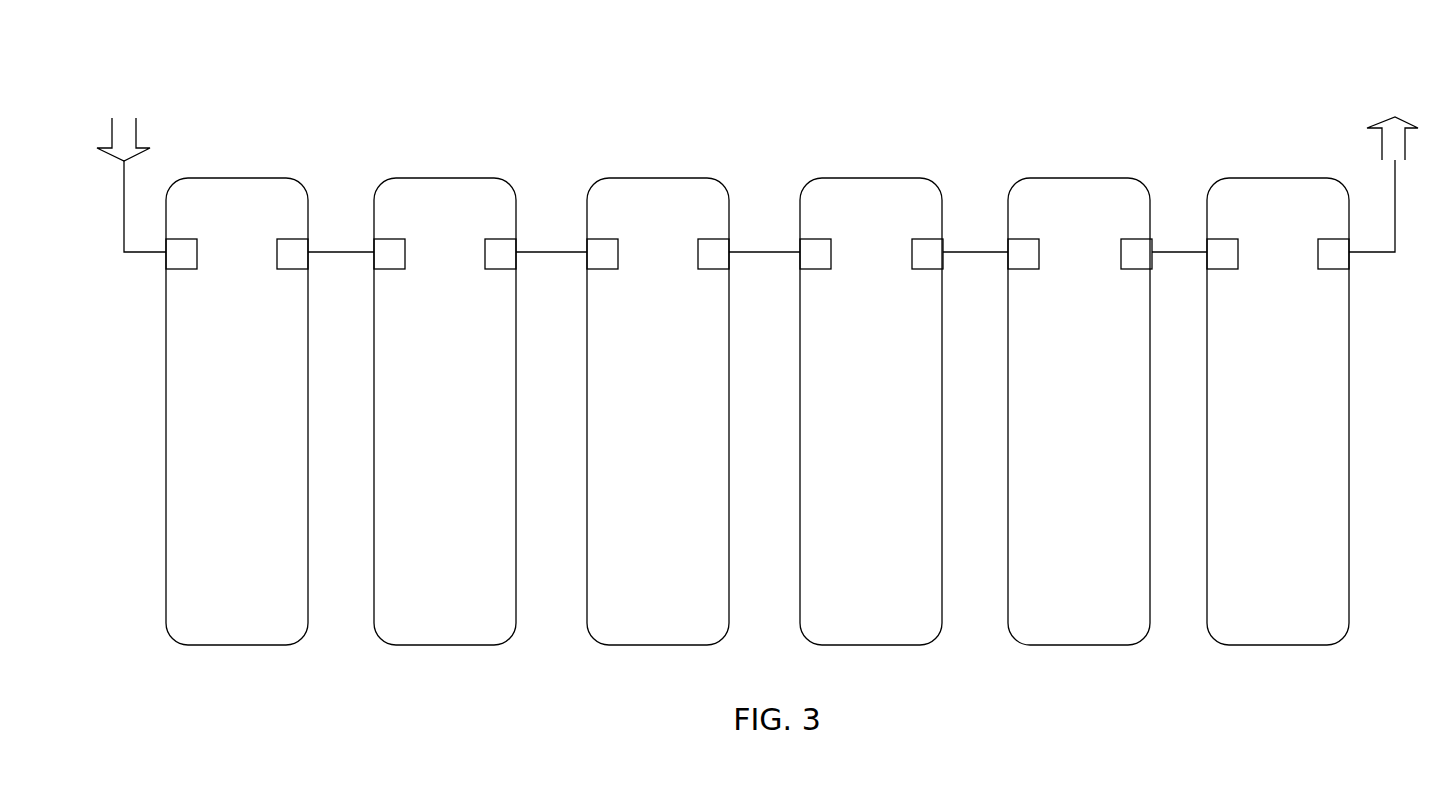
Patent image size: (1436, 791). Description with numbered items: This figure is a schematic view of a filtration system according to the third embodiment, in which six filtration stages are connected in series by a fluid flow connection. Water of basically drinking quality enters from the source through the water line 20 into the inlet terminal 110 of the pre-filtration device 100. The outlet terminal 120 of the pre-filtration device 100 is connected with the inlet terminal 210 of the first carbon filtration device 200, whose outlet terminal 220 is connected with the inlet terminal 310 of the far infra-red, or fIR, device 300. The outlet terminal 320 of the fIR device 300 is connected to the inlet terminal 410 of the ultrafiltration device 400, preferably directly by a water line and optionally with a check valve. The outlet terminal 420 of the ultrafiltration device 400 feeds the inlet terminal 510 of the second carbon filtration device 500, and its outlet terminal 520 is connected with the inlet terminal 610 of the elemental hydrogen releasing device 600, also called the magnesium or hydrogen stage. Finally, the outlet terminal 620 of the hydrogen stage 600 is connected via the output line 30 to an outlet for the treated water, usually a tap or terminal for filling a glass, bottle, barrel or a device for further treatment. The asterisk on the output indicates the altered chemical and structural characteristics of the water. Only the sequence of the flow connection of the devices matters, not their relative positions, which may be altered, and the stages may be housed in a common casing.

The water line 20 is at (115, 240).
The output line 30 is at (1398, 235).
The pre-filtration device 100 is at (237, 411).
The inlet terminal 110 is at (177, 252).
The outlet terminal 120 is at (287, 252).
The first carbon filtration device 200 is at (445, 411).
The inlet terminal 210 is at (388, 252).
The outlet terminal 220 is at (497, 252).
The far Infra-Red (fIR) device 300 is at (658, 411).
The inlet terminal 310 is at (599, 252).
The outlet terminal 320 is at (710, 252).
The ultrafiltration device 400 is at (871, 411).
The inlet terminal 410 is at (812, 252).
The outlet terminal 420 is at (924, 252).
The second carbon filtration device 500 is at (1079, 411).
The inlet terminal 510 is at (1023, 252).
The outlet terminal 520 is at (1131, 252).
The elemental hydrogen releasing device 600 is at (1278, 411).
The inlet terminal 610 is at (1218, 252).
The outlet terminal 620 is at (1332, 252).